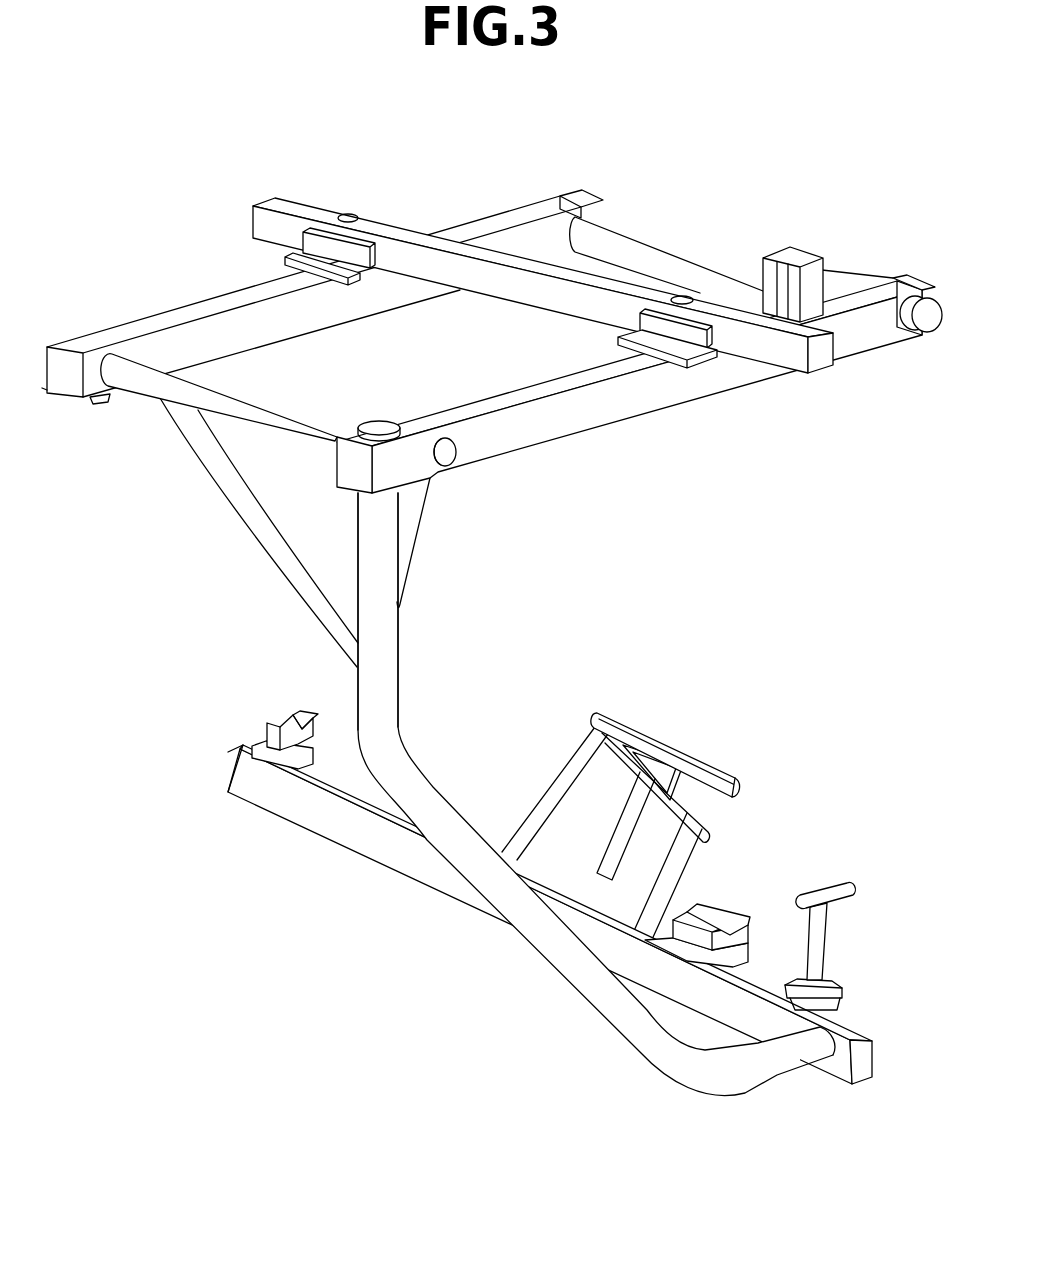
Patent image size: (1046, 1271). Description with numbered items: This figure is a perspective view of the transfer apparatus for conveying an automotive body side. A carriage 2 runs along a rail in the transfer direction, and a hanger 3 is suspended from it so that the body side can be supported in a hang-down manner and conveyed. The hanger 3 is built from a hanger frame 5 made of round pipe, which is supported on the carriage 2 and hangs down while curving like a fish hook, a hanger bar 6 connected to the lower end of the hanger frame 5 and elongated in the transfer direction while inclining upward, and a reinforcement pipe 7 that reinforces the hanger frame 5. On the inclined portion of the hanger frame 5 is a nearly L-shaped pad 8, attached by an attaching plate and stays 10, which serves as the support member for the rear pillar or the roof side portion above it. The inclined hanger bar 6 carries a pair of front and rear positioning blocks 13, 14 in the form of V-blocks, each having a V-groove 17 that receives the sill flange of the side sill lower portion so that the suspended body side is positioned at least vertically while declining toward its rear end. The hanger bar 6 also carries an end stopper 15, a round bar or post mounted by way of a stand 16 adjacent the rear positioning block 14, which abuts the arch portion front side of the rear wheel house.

The carriage 2 is at (465, 226).
The hanger 3 is at (405, 669).
The hanger frame 5 is at (568, 963).
The hanger bar 6 is at (415, 890).
The reinforcement pipe 7 is at (245, 510).
The pad 8 is at (692, 747).
The stays 10 is at (673, 857).
The positioning block 13 is at (252, 724).
The positioning block 14 is at (722, 906).
The end stopper 15 is at (838, 887).
The stand 16 is at (822, 943).
The V-groove 17 is at (290, 716).